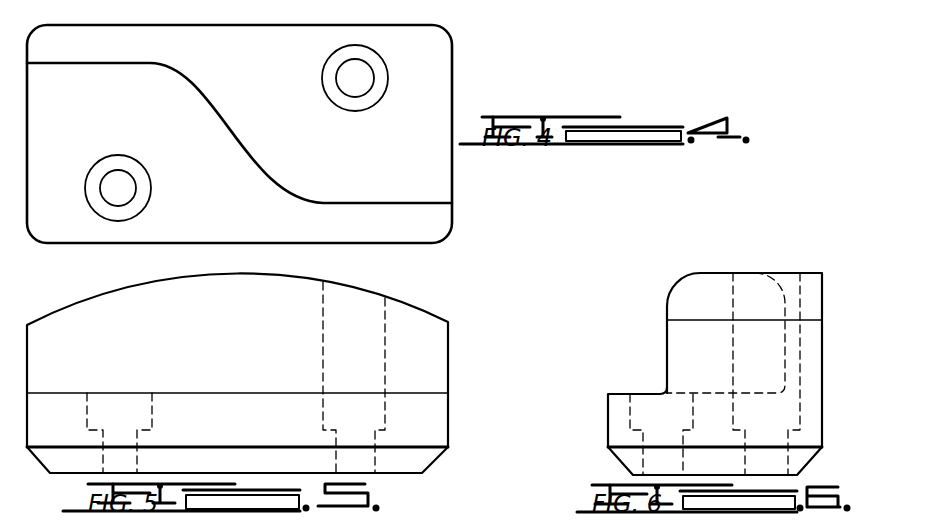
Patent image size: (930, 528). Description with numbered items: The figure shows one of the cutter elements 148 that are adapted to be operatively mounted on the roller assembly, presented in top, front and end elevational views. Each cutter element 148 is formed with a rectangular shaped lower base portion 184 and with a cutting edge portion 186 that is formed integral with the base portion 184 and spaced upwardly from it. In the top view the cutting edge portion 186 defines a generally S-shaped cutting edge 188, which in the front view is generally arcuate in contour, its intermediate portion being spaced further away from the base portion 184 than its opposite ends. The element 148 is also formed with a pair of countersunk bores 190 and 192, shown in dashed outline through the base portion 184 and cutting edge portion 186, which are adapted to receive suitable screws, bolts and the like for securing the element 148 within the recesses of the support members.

In FIG. 4, the cutter element 148 is at (456, 212).
In FIG. 5, the cutter element 148 is at (452, 413).
In FIG. 6, the cutter element 148 is at (785, 268).
In FIG. 4, the lower base portion 184 is at (402, 230).
In FIG. 5, the lower base portion 184 is at (432, 432).
In FIG. 6, the lower base portion 184 is at (612, 403).
In FIG. 4, the cutting edge portion 186 is at (437, 78).
In FIG. 5, the cutting edge portion 186 is at (413, 330).
In FIG. 6, the cutting edge portion 186 is at (734, 237).
In FIG. 4, the S-shaped cutting edge 188 is at (240, 158).
In FIG. 5, the S-shaped cutting edge 188 is at (152, 282).
In FIG. 6, the S-shaped cutting edge 188 is at (667, 322).
In FIG. 4, the countersunk bore 190 is at (120, 172).
In FIG. 5, the countersunk bore 190 is at (150, 410).
In FIG. 6, the countersunk bore 190 is at (640, 407).
In FIG. 4, the countersunk bore 192 is at (355, 90).
In FIG. 5, the countersunk bore 192 is at (323, 357).
In FIG. 6, the countersunk bore 192 is at (735, 348).